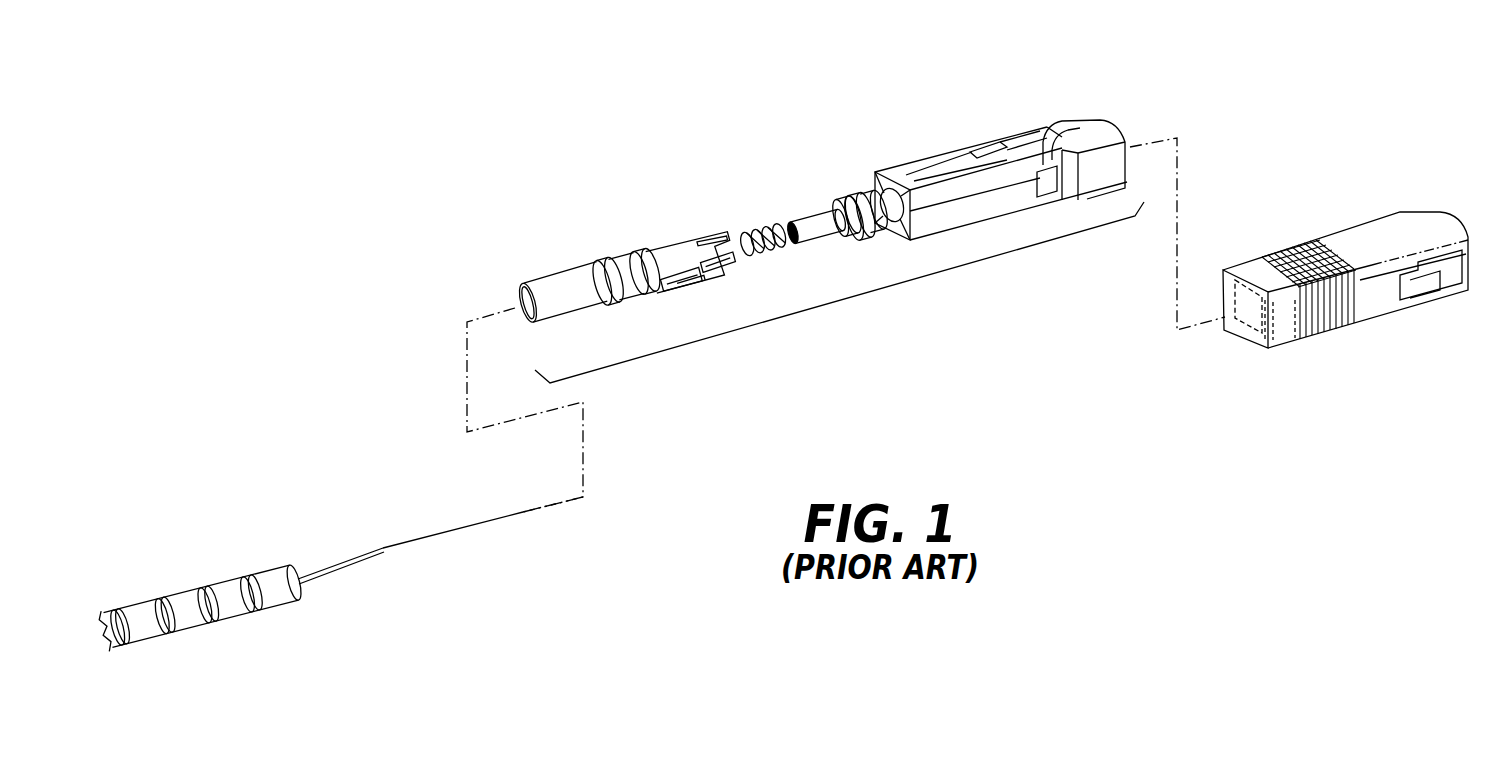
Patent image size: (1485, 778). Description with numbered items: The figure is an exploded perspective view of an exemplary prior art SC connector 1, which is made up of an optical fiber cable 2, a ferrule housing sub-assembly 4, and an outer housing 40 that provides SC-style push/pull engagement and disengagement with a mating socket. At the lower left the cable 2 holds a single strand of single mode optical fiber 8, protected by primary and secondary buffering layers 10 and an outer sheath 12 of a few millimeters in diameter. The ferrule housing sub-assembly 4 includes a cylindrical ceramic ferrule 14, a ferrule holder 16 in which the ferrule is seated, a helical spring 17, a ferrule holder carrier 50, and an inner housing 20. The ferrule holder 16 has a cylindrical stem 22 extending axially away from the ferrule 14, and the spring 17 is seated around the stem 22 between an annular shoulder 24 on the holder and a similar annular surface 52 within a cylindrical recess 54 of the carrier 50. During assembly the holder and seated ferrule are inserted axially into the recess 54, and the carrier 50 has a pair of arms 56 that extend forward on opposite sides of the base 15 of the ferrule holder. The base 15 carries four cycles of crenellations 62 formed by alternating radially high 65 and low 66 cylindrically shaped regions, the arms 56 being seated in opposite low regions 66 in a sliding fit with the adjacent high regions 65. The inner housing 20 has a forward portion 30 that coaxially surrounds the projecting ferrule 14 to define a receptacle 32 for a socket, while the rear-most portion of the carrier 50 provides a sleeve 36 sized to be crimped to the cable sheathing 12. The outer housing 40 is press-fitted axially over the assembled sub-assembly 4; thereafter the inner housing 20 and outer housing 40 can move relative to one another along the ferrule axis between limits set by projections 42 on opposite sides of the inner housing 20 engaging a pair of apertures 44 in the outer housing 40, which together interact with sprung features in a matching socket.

The SC connector 1 is at (606, 135).
The optical fiber cable 2 is at (340, 583).
The ferrule housing sub-assembly 4 is at (862, 291).
The optical fiber 8 is at (461, 535).
The primary and secondary buffering layers 10 is at (355, 570).
The outer sheath 12 is at (240, 620).
The ferrule 14 is at (1001, 186).
The base 15 is at (888, 222).
The ferrule holder 16 is at (837, 199).
The helical spring 17 is at (758, 232).
The inner housing 20 is at (953, 142).
The cylindrical stem 22 is at (812, 237).
The annular shoulder 24 is at (842, 234).
The forward portion 30 is at (1096, 112).
The receptacle 32 is at (1130, 135).
The sleeve 36 is at (566, 313).
The outer housing 40 is at (1345, 268).
The projections 42 is at (1060, 197).
The apertures 44 is at (1423, 300).
The ferrule holder carrier 50 is at (708, 255).
The annular surface 52 is at (677, 288).
The cylindrical recess 54 is at (722, 262).
The arms 56 is at (707, 227).
The crenellations 62 is at (855, 195).
The radially high regions 65 is at (862, 193).
The radially low regions 66 is at (893, 215).